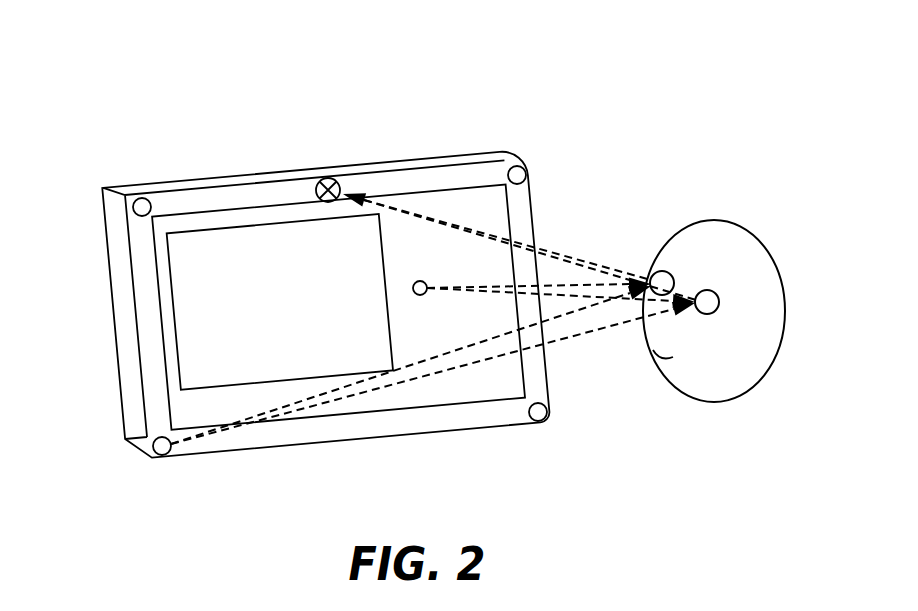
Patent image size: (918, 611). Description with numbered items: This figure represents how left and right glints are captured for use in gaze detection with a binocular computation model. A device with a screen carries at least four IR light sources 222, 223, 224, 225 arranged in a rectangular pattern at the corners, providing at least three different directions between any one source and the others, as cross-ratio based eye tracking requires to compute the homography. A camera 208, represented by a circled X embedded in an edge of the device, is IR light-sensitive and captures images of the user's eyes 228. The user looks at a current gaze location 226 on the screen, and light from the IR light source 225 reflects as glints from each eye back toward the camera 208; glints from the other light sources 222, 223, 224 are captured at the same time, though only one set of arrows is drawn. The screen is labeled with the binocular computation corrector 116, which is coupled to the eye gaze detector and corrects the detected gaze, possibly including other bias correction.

The binocular computation corrector 116 is at (377, 351).
The camera 208 is at (331, 179).
The light source 222 is at (147, 200).
The light source 223 is at (527, 168).
The light source 224 is at (547, 423).
The IR light source 225 is at (153, 446).
The current gaze location 226 is at (420, 295).
The user eyes 228 is at (738, 233).